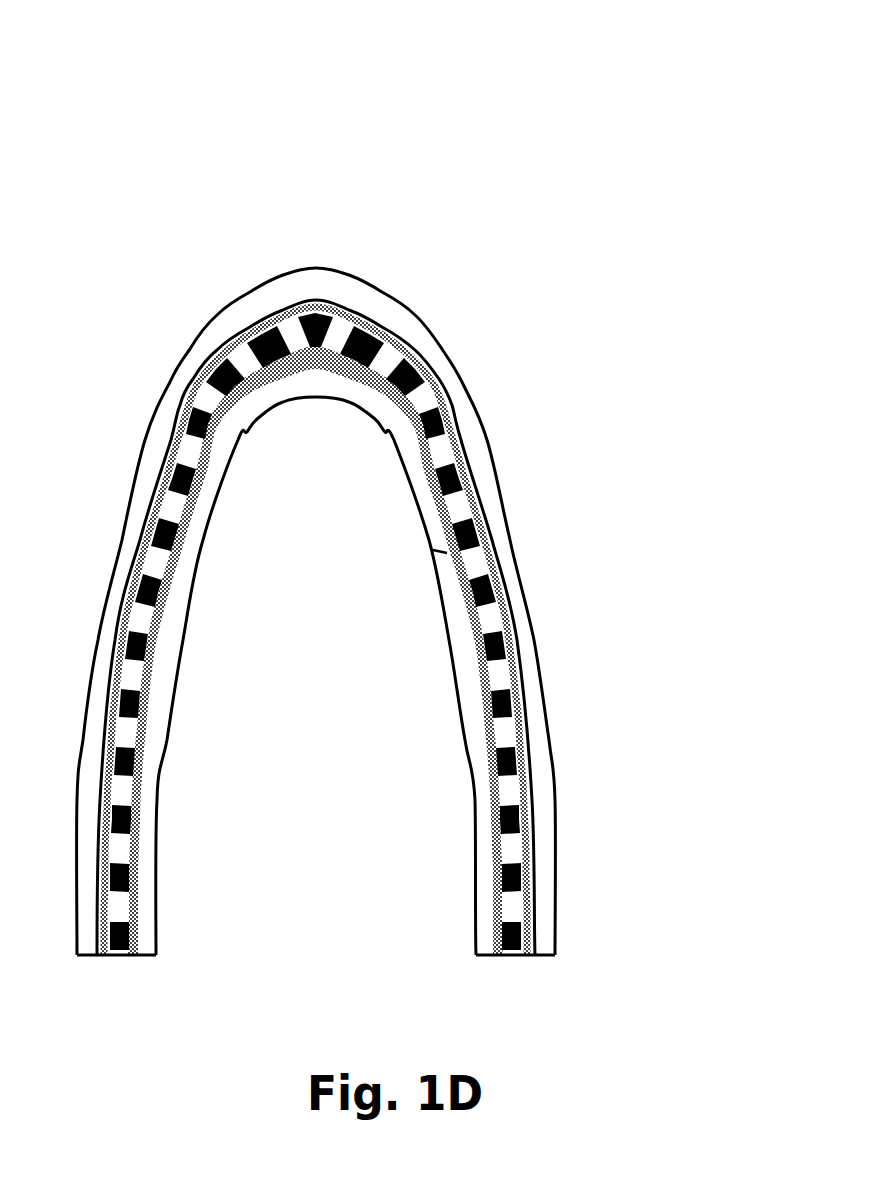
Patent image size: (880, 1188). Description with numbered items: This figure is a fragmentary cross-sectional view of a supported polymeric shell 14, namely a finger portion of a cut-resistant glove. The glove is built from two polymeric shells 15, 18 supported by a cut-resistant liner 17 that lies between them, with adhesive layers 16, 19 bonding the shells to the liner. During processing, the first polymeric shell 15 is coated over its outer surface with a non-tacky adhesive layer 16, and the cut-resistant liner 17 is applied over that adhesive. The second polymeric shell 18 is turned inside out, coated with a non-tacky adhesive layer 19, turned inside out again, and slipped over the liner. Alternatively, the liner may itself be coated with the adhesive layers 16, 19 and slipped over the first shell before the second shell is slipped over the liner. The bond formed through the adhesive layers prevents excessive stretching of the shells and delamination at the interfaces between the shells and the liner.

The supported polymeric shell 14 is at (507, 168).
The polymeric shell 15 is at (488, 527).
The adhesive layer 16 is at (480, 690).
The cut-resistant liner 17 is at (417, 407).
The polymeric shell 18 is at (490, 485).
The adhesive layer 19 is at (385, 331).